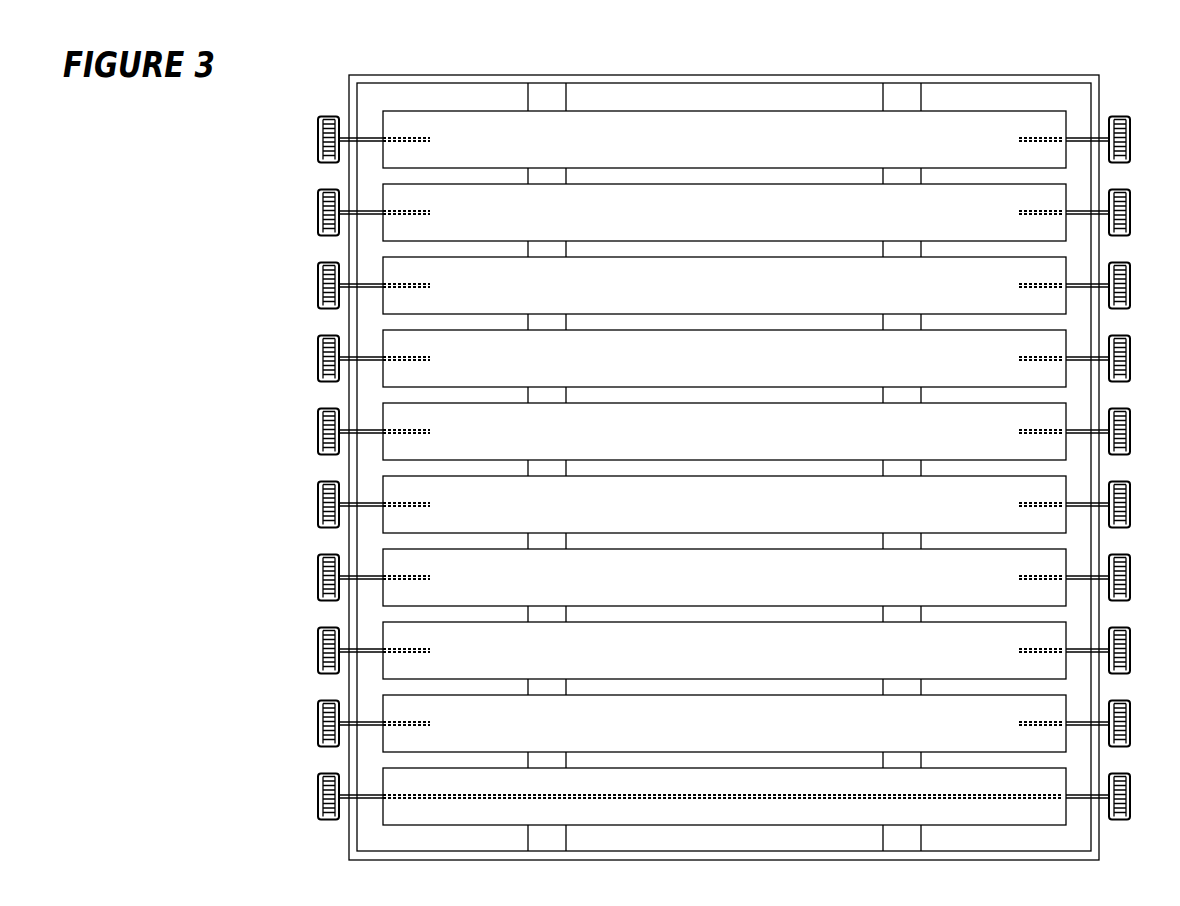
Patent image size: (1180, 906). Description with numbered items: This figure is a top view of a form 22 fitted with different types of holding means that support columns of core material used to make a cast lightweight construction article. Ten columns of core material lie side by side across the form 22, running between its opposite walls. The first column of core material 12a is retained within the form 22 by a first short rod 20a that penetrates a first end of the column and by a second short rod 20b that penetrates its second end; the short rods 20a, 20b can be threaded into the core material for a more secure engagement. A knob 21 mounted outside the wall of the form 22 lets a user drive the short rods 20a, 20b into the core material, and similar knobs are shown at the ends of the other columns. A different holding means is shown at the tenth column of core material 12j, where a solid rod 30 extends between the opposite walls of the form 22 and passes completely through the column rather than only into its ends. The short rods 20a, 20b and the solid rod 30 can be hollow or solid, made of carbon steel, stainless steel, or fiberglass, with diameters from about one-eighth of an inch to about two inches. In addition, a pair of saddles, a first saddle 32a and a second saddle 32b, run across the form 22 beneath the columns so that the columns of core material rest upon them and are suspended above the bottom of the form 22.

The form 22 is at (438, 75).
The first saddle 32a is at (566, 98).
The second saddle 32b is at (883, 98).
The first column of core material 12a is at (762, 123).
The tenth column of core material 12j is at (762, 812).
The first short rod 20a is at (368, 137).
The second short rod 20b is at (1078, 137).
The knob 21 is at (318, 140).
The solid rod 30 is at (368, 800).